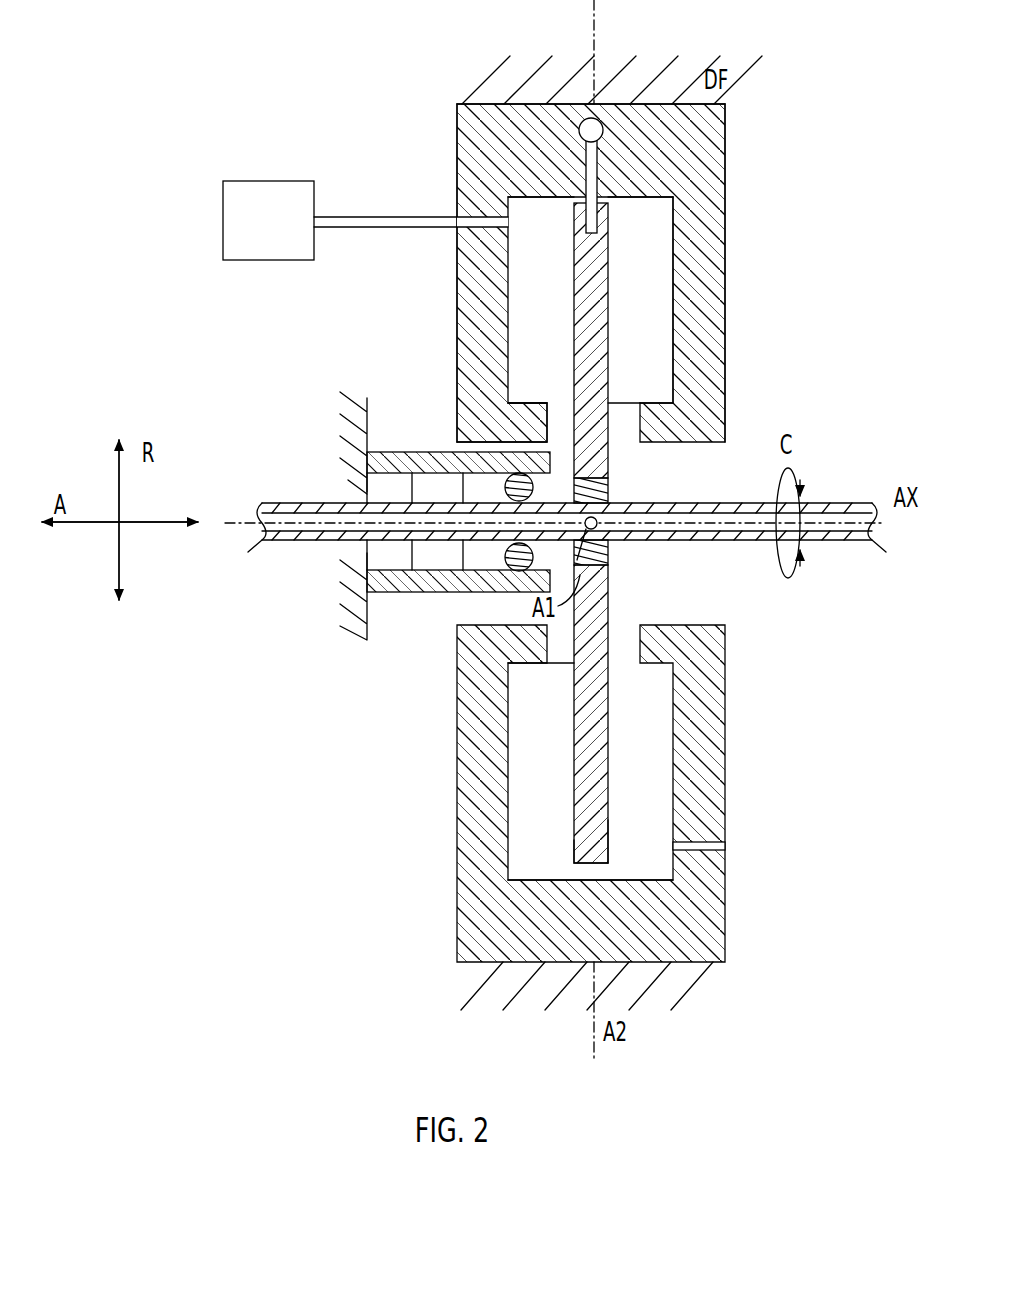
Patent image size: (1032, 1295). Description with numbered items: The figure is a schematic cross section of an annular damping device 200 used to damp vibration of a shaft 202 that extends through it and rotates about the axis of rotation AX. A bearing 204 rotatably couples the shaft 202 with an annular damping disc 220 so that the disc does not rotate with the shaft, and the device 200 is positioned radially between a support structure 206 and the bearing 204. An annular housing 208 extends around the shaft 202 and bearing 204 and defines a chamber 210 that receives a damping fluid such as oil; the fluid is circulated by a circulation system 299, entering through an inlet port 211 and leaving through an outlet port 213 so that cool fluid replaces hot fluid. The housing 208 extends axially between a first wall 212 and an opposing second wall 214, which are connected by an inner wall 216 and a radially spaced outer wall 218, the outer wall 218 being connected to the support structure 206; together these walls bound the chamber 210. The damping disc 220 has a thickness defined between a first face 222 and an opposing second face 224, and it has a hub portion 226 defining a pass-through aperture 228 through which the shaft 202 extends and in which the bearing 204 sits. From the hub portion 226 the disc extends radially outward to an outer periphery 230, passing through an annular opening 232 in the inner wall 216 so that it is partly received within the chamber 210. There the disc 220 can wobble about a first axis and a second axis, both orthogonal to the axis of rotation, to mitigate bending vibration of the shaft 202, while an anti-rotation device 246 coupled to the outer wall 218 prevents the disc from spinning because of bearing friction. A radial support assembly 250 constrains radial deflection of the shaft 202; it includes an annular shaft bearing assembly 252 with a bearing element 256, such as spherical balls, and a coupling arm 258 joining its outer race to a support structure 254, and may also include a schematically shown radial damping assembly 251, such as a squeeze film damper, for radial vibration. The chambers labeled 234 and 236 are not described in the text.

The damping device 200 is at (380, 108).
The shaft 202 is at (295, 542).
The bearing 204 is at (612, 490).
The support structure 206 is at (478, 80).
The annular housing 208 is at (727, 125).
The chamber 210 is at (643, 383).
The inlet port 211 is at (447, 212).
The first wall 212 is at (478, 330).
The outlet port 213 is at (730, 846).
The second wall 214 is at (713, 187).
The inner wall 216 is at (500, 420).
The outer wall 218 is at (545, 110).
The damping disc 220 is at (600, 725).
The first face 222 is at (570, 820).
The second face 224 is at (608, 842).
The hub portion 226 is at (618, 578).
The pass-through aperture 228 is at (608, 510).
The outer periphery 230 is at (552, 860).
The annular opening 232 is at (625, 628).
The left upper chamber 234 is at (540, 228).
The left lower chamber 236 is at (540, 722).
The anti-rotation device 246 is at (640, 222).
The radial support assembly 250 is at (448, 598).
The radial damping assembly 251 is at (430, 487).
The shaft bearing assembly 252 is at (474, 458).
The support structure 254 is at (350, 434).
The bearing element 256 is at (520, 574).
The coupling arm 258 is at (390, 598).
The circulation system 299 is at (268, 220).